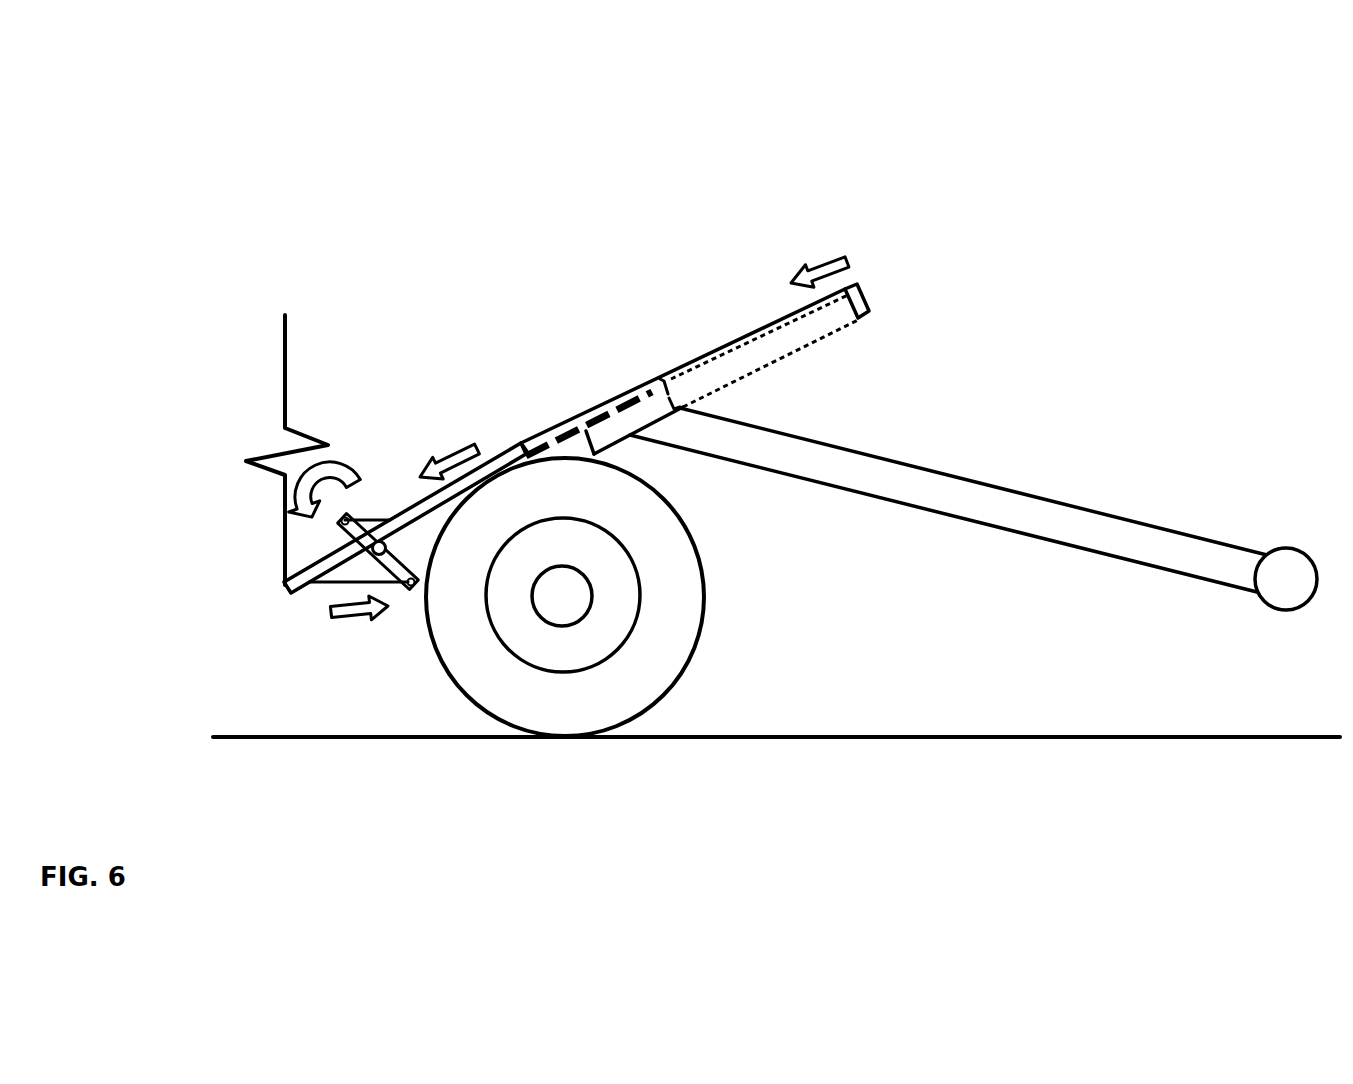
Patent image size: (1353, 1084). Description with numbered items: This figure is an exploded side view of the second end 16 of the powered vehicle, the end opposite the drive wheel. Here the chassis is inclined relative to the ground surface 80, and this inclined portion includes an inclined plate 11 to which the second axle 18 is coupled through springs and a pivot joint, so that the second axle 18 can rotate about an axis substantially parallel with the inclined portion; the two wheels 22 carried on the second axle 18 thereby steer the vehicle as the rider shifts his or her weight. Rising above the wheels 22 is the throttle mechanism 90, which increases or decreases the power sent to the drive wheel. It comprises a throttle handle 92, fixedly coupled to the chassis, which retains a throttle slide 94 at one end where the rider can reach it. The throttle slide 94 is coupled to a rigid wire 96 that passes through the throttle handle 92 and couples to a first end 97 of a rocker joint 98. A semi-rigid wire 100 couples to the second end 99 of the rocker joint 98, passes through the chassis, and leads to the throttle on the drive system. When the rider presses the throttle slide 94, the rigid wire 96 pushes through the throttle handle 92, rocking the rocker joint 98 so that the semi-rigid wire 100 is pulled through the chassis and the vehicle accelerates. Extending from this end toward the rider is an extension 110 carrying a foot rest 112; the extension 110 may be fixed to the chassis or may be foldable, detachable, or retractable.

The inclined plate 11 is at (303, 573).
The second end 16 is at (672, 226).
The second axle 18 is at (542, 622).
The wheels 22 is at (622, 727).
The ground surface 80 is at (951, 735).
The throttle mechanism 90 is at (735, 323).
The throttle handle 92 is at (796, 357).
The throttle slide 94 is at (866, 301).
The rigid wire 96 is at (600, 413).
The first end 97 is at (343, 518).
The rocker joint 98 is at (373, 545).
The second end 99 is at (409, 587).
The semi-rigid wire 100 is at (337, 585).
The extension 110 is at (967, 474).
The foot rest 112 is at (1283, 573).